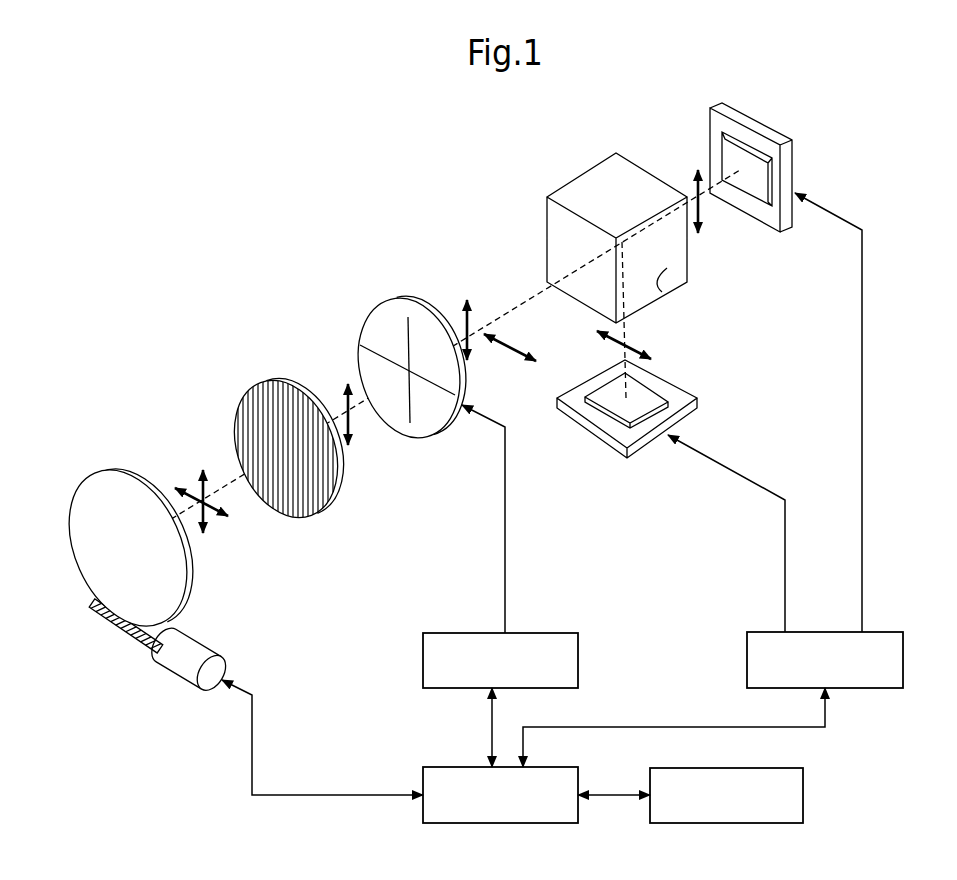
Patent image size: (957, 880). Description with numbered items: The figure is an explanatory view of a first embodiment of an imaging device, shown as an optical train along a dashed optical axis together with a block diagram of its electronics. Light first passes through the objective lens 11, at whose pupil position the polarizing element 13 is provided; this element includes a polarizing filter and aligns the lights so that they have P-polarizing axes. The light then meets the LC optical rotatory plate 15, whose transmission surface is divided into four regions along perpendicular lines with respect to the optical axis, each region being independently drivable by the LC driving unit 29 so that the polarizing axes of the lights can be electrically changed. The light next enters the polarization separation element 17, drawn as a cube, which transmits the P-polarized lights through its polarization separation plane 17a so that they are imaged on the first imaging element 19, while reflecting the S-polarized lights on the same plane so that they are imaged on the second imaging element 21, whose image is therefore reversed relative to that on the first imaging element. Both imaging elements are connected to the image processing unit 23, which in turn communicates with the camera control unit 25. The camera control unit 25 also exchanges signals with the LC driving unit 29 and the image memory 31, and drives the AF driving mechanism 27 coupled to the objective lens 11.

The objective lens 11 is at (104, 488).
The polarizing element 13 is at (263, 383).
The LC optical rotatory plate 15 is at (407, 302).
The polarization separation element 17 is at (580, 188).
The polarization separation plane 17a is at (662, 292).
The first imaging element 19 is at (746, 112).
The second imaging element 21 is at (632, 452).
The image processing unit 23 is at (748, 657).
The camera control unit 25 is at (430, 768).
The AF driving mechanism 27 is at (177, 683).
The LC driving unit 29 is at (578, 660).
The image memory 31 is at (803, 795).